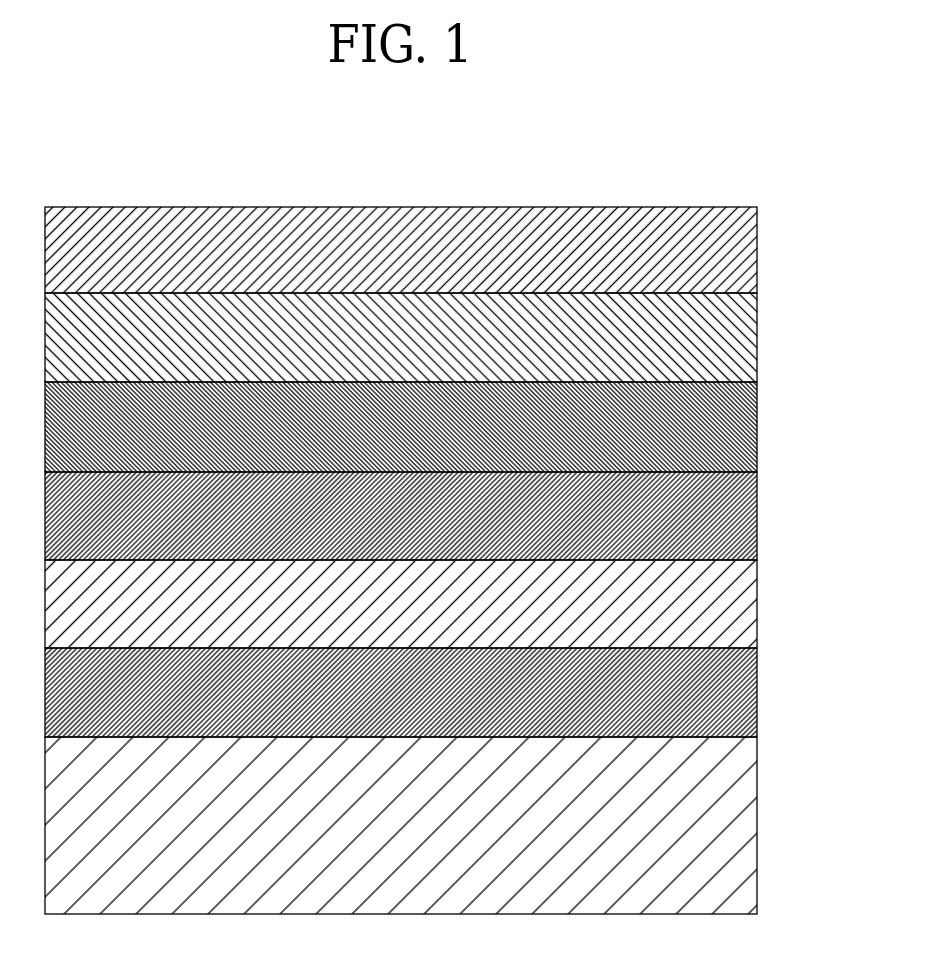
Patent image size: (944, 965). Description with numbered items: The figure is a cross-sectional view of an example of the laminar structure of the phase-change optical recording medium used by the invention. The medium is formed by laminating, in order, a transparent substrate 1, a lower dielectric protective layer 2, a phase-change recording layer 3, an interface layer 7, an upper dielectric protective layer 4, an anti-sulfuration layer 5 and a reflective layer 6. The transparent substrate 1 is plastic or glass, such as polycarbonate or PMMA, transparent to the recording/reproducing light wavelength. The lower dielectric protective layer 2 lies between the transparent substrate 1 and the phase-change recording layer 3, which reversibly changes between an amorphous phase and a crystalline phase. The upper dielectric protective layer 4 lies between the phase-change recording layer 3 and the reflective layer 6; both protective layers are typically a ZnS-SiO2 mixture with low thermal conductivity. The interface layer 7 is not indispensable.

The transparent substrate 1 is at (747, 815).
The lower dielectric protective layer 2 is at (752, 685).
The phase-change recording layer 3 is at (740, 603).
The upper dielectric protective layer 4 is at (745, 427).
The anti-sulfuration layer 5 is at (740, 343).
The reflective layer 6 is at (750, 243).
The interface layer 7 is at (750, 500).